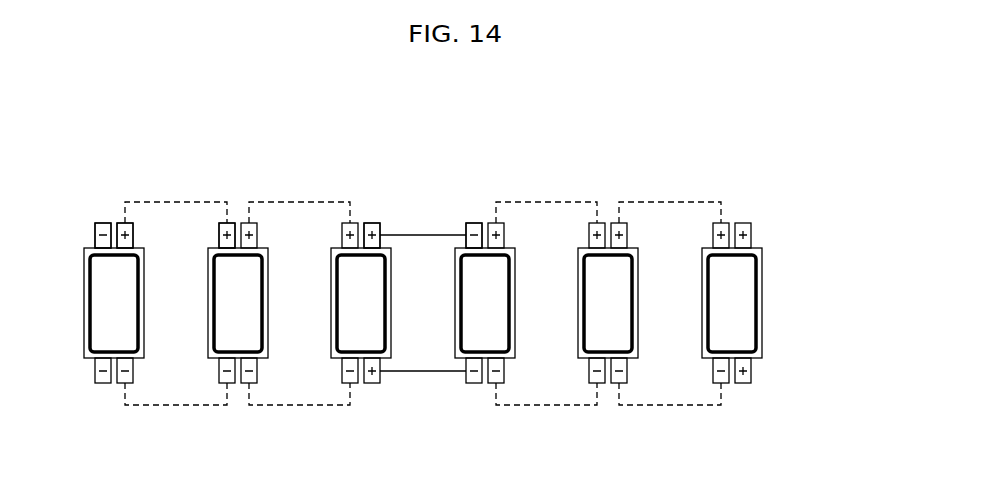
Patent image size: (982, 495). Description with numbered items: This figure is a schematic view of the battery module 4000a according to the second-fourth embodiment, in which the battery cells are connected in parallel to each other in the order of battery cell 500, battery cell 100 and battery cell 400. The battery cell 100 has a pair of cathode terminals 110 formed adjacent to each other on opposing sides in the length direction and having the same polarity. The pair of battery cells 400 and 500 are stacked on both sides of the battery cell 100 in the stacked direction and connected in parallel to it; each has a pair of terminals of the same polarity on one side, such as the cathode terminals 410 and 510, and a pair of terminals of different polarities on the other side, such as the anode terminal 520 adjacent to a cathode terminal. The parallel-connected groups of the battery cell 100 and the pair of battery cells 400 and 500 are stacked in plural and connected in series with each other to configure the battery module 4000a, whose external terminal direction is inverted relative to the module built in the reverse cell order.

The battery module 4000a is at (467, 285).
The battery cell 500 is at (84, 327).
The battery cell 100 is at (208, 327).
The battery cell 400 is at (331, 327).
The anode terminal 520 is at (102, 223).
The cathode terminal 510 is at (118, 223).
The cathode terminal 110 is at (220, 223).
The cathode terminal 410 is at (368, 223).